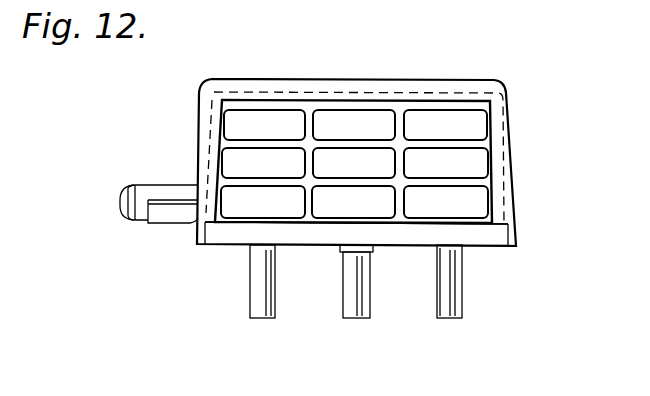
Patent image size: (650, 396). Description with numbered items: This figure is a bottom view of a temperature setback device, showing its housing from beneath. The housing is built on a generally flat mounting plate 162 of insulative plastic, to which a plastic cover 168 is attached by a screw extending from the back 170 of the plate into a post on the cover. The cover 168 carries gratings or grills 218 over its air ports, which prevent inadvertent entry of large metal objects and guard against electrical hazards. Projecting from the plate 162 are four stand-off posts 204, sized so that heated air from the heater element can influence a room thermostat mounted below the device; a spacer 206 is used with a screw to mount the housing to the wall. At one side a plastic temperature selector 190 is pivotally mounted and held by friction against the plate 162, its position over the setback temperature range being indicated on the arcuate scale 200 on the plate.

The mounting plate 162 is at (231, 232).
The plastic cover 168 is at (470, 78).
The back of plate 170 is at (494, 237).
The plastic temperature selector 190 is at (118, 203).
The arcuate scale 200 is at (173, 218).
The stand-off posts 204 is at (256, 320).
The spacer 206 is at (355, 322).
The gratings or grills 218 is at (357, 156).